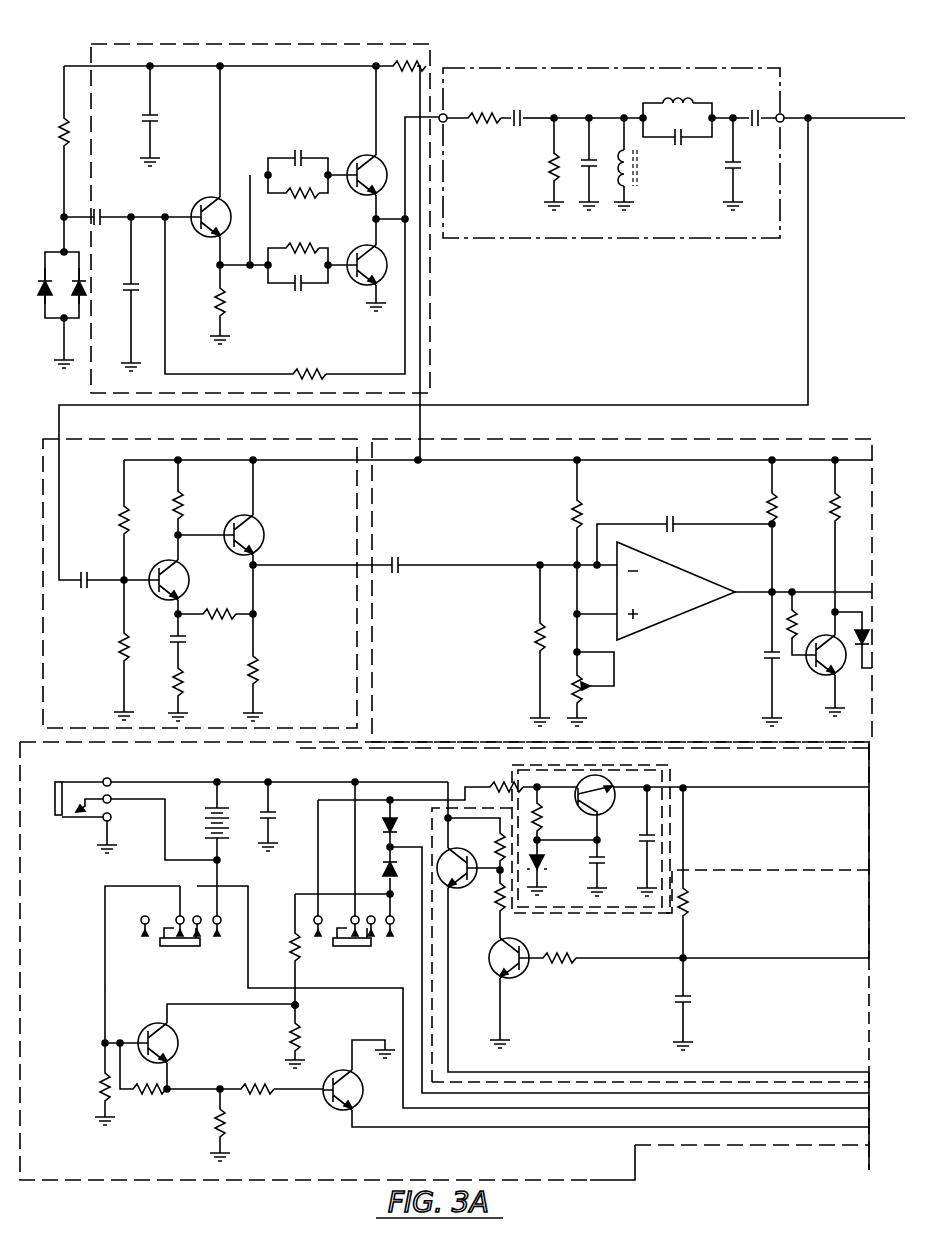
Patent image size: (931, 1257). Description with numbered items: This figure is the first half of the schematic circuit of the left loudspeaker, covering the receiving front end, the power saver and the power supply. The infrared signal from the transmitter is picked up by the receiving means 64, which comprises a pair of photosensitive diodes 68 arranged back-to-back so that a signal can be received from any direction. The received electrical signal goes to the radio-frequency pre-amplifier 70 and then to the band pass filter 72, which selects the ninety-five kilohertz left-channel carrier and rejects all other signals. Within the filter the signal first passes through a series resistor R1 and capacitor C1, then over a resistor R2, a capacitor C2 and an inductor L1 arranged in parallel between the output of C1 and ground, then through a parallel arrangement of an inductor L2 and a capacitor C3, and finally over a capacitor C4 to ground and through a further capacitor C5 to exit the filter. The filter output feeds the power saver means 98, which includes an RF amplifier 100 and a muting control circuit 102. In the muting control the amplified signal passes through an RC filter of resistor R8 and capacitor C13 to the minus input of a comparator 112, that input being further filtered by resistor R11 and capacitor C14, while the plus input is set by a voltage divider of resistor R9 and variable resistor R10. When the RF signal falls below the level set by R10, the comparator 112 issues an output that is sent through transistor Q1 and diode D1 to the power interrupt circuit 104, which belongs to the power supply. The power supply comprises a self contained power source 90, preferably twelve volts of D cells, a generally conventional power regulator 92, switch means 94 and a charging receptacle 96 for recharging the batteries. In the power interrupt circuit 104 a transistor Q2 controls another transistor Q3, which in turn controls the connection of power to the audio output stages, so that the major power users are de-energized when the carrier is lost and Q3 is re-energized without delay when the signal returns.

The receiving means 64 is at (101, 276).
The photosensitive diodes 68 is at (55, 274).
The radio-frequency pre-amplifier 70 is at (225, 233).
The band pass filter 72 is at (672, 122).
The power saver means 98 is at (44, 438).
The RF amplifier 100 is at (234, 442).
The muting control circuit 102 is at (562, 579).
The comparator 112 is at (668, 608).
The charging receptacle 96 is at (68, 820).
The self contained power source 90 is at (226, 840).
The switch means 94 is at (176, 954).
The power regulator 92 is at (662, 777).
The power interrupt circuit 104 is at (627, 980).
The resistor R1 is at (479, 107).
The capacitor C1 is at (532, 108).
The resistor R2 is at (538, 164).
The capacitor C2 is at (582, 164).
The inductor L1 is at (640, 164).
The inductor L2 is at (677, 97).
The capacitor C3 is at (677, 130).
The capacitor C4 is at (746, 164).
The capacitor C5 is at (752, 109).
The capacitor C13 is at (400, 557).
The capacitor C14 is at (684, 531).
The resistor R8 is at (524, 645).
The resistor R9 is at (558, 556).
The variable resistor R10 is at (590, 689).
The resistor R11 is at (756, 593).
The transistor Q1 is at (831, 588).
The transistor Q2 is at (532, 993).
The transistor Q3 is at (653, 927).
The diode D1 is at (858, 646).